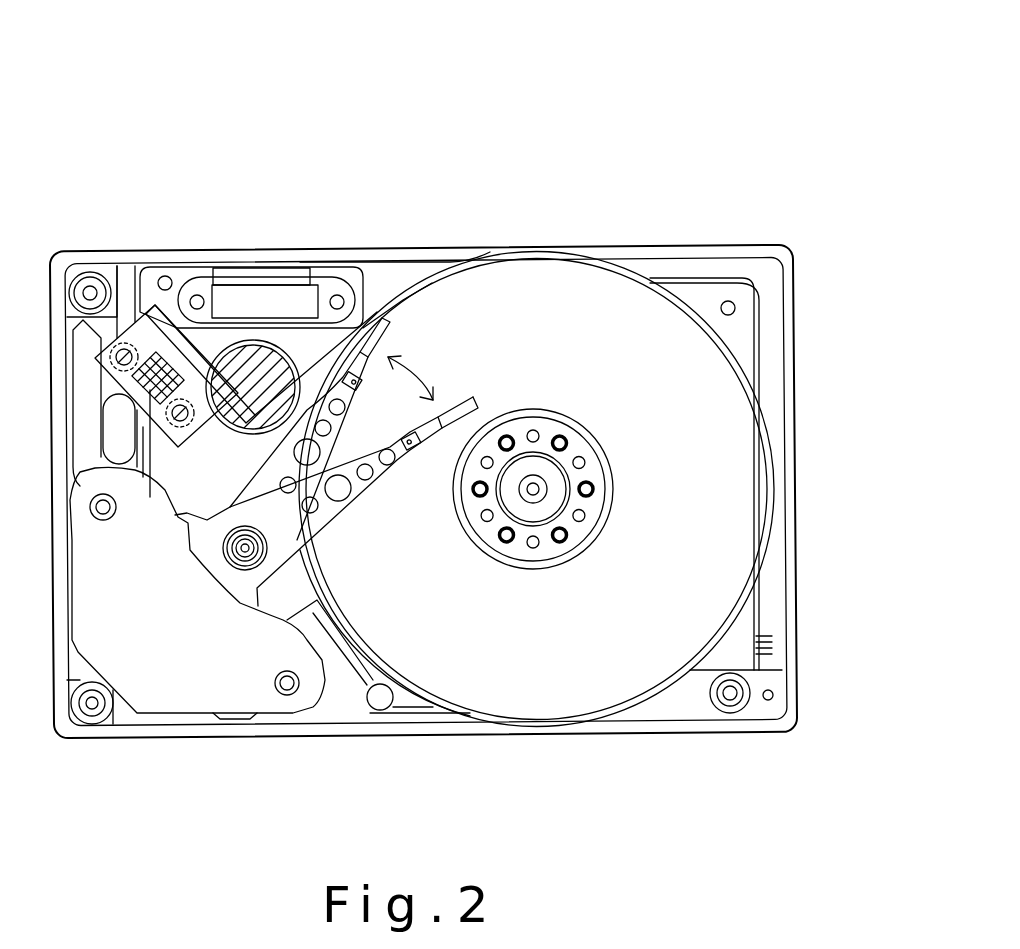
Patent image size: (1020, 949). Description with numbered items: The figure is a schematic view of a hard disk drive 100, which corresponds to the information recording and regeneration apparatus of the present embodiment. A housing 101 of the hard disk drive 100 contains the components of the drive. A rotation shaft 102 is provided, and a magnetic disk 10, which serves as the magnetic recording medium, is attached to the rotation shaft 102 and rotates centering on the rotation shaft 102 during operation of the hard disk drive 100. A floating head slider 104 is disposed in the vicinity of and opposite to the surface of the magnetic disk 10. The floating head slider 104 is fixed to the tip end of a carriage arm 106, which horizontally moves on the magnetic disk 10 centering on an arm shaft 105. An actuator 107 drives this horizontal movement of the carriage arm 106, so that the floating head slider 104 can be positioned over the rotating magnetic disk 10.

The hard disk drive 100 is at (580, 110).
The housing 101 is at (648, 247).
The magnetic disk 10 is at (715, 443).
The rotation shaft 102 is at (555, 497).
The floating head slider 104 is at (462, 398).
The arm shaft 105 is at (245, 567).
The carriage arm 106 is at (322, 518).
The actuator 107 is at (152, 688).